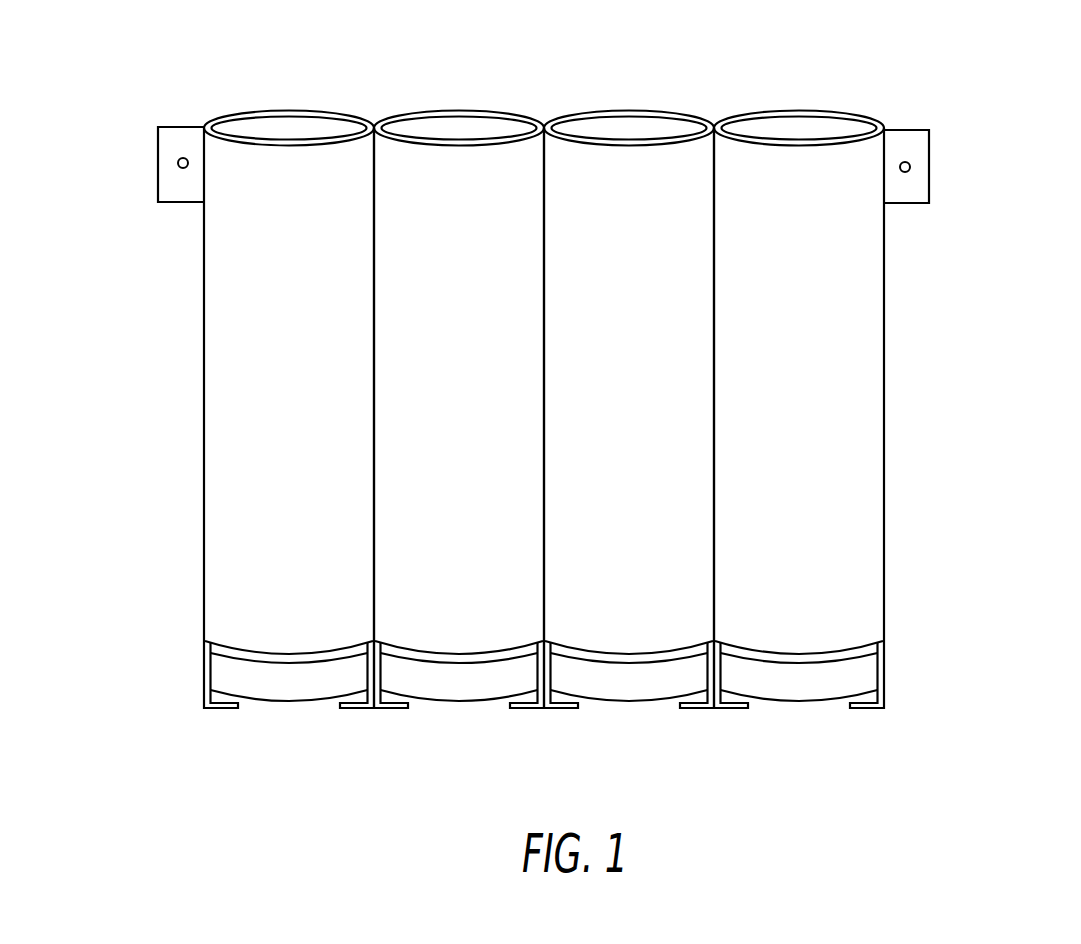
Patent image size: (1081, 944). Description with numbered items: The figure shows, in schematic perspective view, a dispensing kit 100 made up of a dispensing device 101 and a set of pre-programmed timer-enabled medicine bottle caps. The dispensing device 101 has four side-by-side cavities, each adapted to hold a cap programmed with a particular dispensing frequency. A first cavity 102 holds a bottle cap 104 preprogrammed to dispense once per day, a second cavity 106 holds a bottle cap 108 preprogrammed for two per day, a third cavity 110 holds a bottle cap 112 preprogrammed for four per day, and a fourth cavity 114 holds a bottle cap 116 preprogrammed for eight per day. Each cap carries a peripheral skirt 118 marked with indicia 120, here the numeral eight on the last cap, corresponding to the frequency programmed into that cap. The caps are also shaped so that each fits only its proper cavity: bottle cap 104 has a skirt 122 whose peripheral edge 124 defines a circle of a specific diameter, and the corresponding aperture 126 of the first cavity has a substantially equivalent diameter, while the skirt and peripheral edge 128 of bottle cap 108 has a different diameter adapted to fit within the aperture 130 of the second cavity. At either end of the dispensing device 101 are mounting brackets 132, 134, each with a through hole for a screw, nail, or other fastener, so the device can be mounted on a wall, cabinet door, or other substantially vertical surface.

The dispensing kit 100 is at (975, 286).
The dispensing device 101 is at (868, 403).
The first cavity 102 is at (245, 127).
The bottle cap 104 is at (293, 703).
The second cavity 106 is at (427, 128).
The bottle cap 108 is at (467, 703).
The third cavity 110 is at (625, 133).
The bottle cap 112 is at (640, 705).
The fourth cavity 114 is at (807, 133).
The bottle cap 116 is at (818, 705).
The peripheral skirt 118 is at (863, 683).
The indicia 120 is at (813, 682).
The skirt 122 is at (240, 680).
The peripheral edge 124 is at (267, 662).
The aperture 126 is at (290, 110).
The skirt and peripheral edge 128 is at (508, 665).
The aperture 130 is at (460, 110).
The mounting bracket 132 is at (182, 138).
The mounting bracket 134 is at (908, 148).